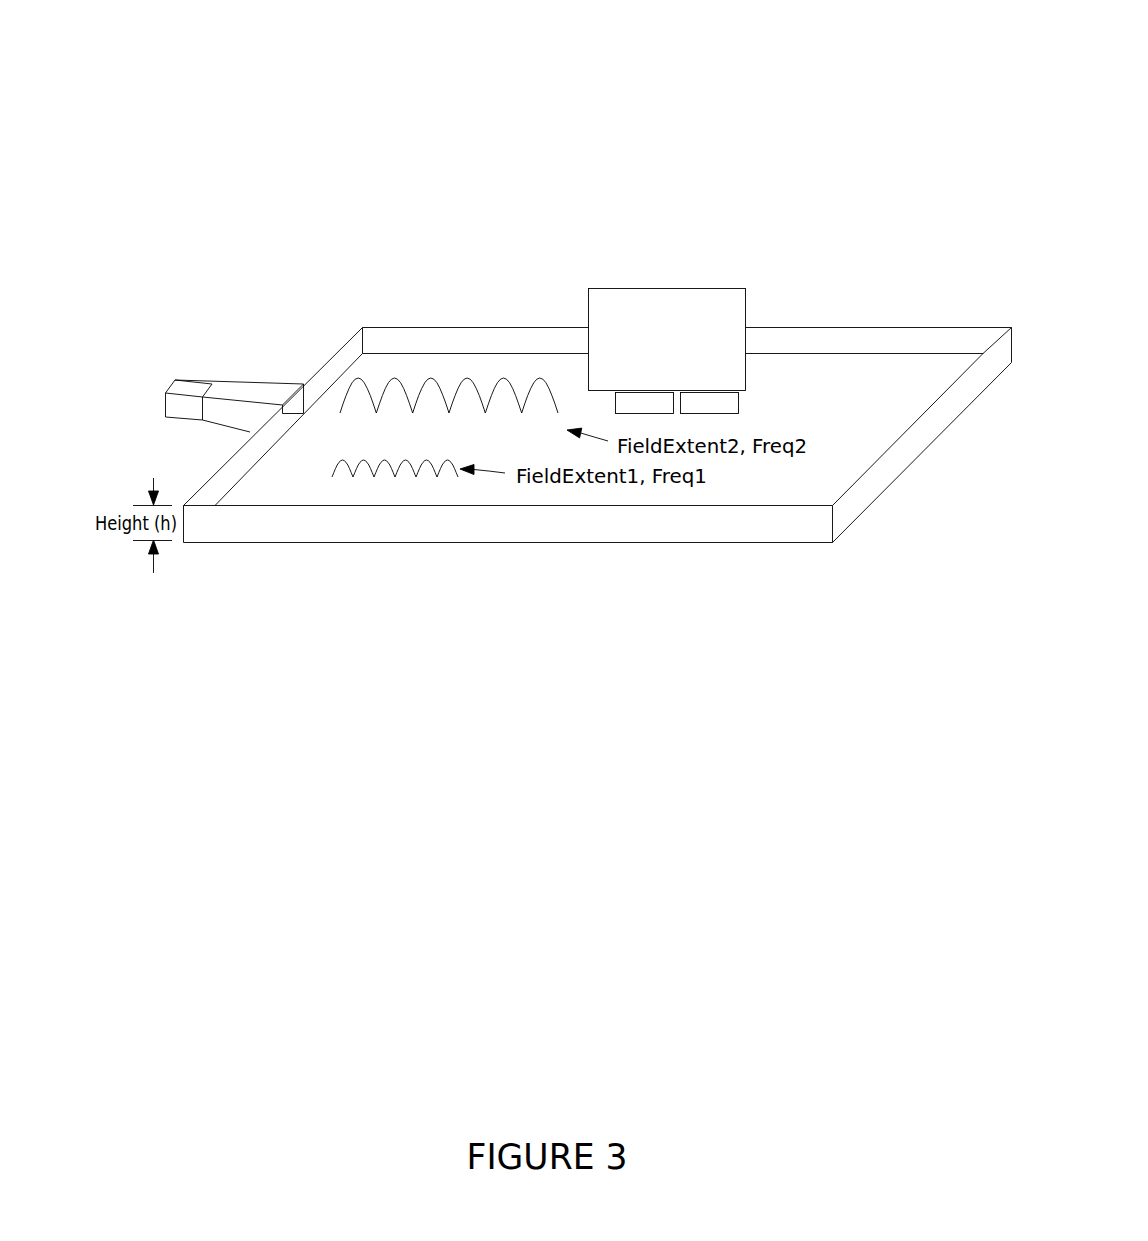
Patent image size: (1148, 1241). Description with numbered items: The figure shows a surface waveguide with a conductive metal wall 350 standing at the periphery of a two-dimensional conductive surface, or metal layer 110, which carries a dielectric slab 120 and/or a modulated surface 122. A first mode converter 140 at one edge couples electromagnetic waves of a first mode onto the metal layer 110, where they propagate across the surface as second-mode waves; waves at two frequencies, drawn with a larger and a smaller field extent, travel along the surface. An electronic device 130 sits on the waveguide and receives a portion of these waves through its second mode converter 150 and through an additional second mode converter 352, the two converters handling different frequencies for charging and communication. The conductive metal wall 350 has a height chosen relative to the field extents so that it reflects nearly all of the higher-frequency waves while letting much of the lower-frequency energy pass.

The two-dimensional conductive surface (metal layer) 110 is at (660, 555).
The dielectric slab 120 is at (380, 325).
The modulated surface 122 is at (454, 346).
The electronic device 130 is at (683, 372).
The first mode converter 140 is at (212, 379).
The second mode converter 150 is at (599, 403).
The conductive metal wall 350 is at (829, 324).
The additional second mode converter 352 is at (755, 405).